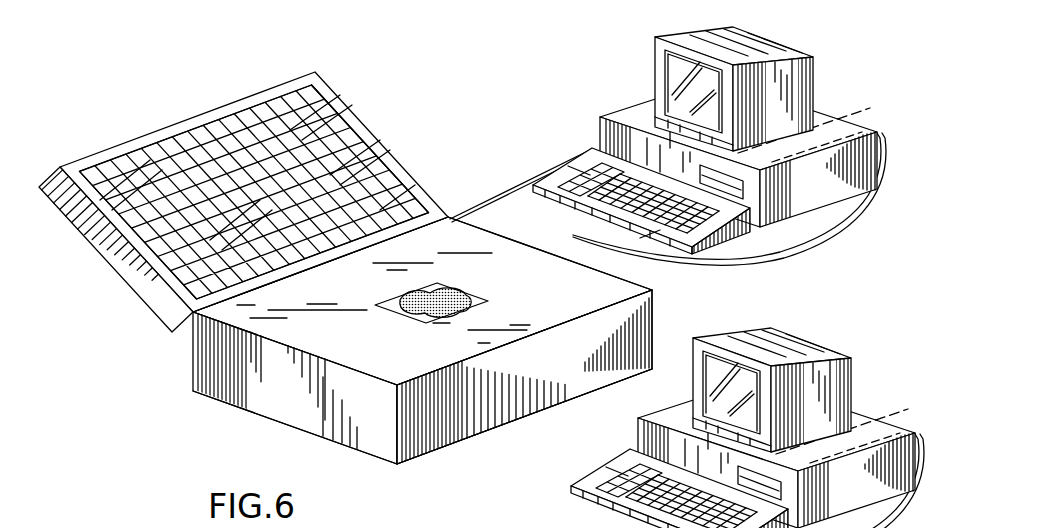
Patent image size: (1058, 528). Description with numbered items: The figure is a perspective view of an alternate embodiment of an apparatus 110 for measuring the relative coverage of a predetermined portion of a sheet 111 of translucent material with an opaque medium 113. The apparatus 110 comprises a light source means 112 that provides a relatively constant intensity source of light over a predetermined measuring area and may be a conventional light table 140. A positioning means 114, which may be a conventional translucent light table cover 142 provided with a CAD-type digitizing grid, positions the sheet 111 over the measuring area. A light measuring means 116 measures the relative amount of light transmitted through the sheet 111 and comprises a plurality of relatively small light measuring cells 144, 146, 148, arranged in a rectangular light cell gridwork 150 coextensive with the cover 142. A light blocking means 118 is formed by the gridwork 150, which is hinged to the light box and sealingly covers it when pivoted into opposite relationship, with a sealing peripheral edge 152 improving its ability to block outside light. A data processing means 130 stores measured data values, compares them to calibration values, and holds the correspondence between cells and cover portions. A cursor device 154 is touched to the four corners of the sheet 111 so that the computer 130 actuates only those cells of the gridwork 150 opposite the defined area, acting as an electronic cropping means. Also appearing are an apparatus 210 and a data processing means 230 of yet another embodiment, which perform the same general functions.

The apparatus 110 is at (503, 261).
The sheet of translucent material 111 is at (467, 292).
The light source means 112 is at (660, 332).
The opaque medium 113 is at (428, 287).
The positioning means 114 is at (608, 309).
The light measuring means 116 is at (350, 137).
The light blocking means 118 is at (162, 305).
The data processing means 130 is at (836, 105).
The light table 140 is at (638, 378).
The translucent light table cover 142 is at (506, 236).
The light measuring cell 144 is at (300, 95).
The light measuring cell 146 is at (304, 93).
The light measuring cell 148 is at (306, 103).
The light cell gridwork 150 is at (243, 196).
The sealing peripheral edge 152 is at (147, 255).
The cursor device 154 is at (607, 250).
The apparatus 210 is at (465, 527).
The data processing means 230 is at (840, 330).